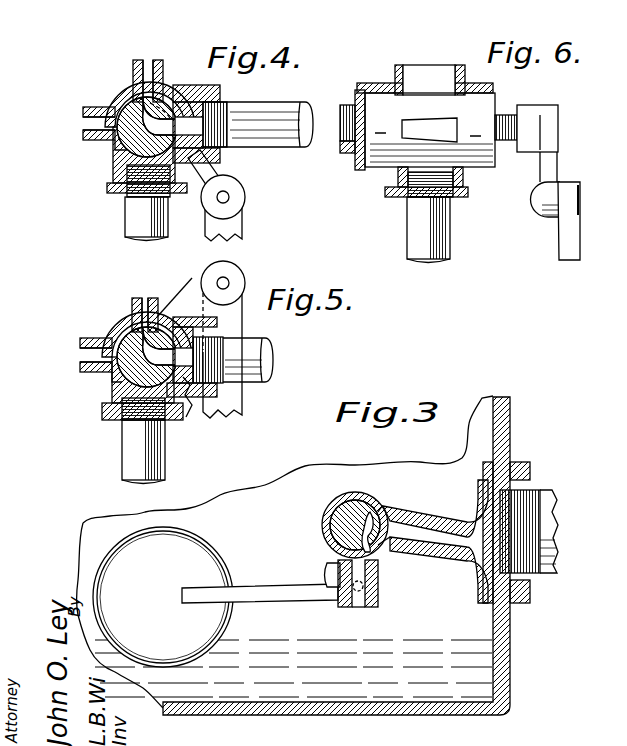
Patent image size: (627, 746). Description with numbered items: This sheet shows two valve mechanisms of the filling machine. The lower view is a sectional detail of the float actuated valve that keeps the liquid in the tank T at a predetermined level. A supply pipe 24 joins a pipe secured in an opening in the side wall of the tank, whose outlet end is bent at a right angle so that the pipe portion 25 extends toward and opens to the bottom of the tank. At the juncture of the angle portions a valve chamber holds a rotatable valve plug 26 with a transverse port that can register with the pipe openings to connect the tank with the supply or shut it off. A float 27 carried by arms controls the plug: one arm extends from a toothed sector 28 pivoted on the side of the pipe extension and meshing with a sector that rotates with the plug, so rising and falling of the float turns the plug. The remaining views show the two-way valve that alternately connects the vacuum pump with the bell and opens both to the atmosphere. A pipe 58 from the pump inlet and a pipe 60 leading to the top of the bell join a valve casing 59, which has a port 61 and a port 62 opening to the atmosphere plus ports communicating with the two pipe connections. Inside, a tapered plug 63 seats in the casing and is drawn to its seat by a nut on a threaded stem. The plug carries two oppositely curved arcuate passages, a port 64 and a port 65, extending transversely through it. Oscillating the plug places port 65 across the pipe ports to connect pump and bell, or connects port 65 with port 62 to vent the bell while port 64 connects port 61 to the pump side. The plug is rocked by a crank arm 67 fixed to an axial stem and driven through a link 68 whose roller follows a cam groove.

In FIG. 3, the tank T is at (505, 668).
In FIG. 3, the pipe 24 is at (548, 495).
In FIG. 3, the pipe portion 25 is at (380, 597).
In FIG. 3, the valve plug 26 is at (376, 505).
In FIG. 3, the float 27 is at (163, 597).
In FIG. 3, the toothed sector 28 is at (330, 576).
In FIG. 4, the pipe 58 is at (131, 222).
In FIG. 6, the pipe 58 is at (447, 241).
In FIG. 5, the pipe 58 is at (130, 450).
In FIG. 4, the valve casing 59 is at (118, 98).
In FIG. 6, the valve casing 59 is at (396, 84).
In FIG. 5, the valve casing 59 is at (118, 327).
In FIG. 4, the pipe 60 is at (287, 110).
In FIG. 5, the pipe 60 is at (270, 358).
In FIG. 4, the port 61 is at (95, 128).
In FIG. 5, the port 61 is at (85, 355).
In FIG. 4, the port 62 is at (150, 58).
In FIG. 6, the port 62 is at (433, 76).
In FIG. 5, the port 62 is at (150, 300).
In FIG. 4, the tapered plug 63 is at (117, 150).
In FIG. 6, the tapered plug 63 is at (383, 142).
In FIG. 5, the tapered plug 63 is at (115, 336).
In FIG. 4, the port 64 is at (107, 142).
In FIG. 5, the port 64 is at (107, 376).
In FIG. 4, the port 65 is at (165, 98).
In FIG. 6, the port 65 is at (452, 128).
In FIG. 5, the port 65 is at (168, 328).
In FIG. 4, the crank arm 67 is at (228, 172).
In FIG. 6, the crank arm 67 is at (556, 155).
In FIG. 5, the crank arm 67 is at (183, 334).
In FIG. 4, the link 68 is at (243, 221).
In FIG. 6, the link 68 is at (570, 231).
In FIG. 5, the link 68 is at (233, 312).